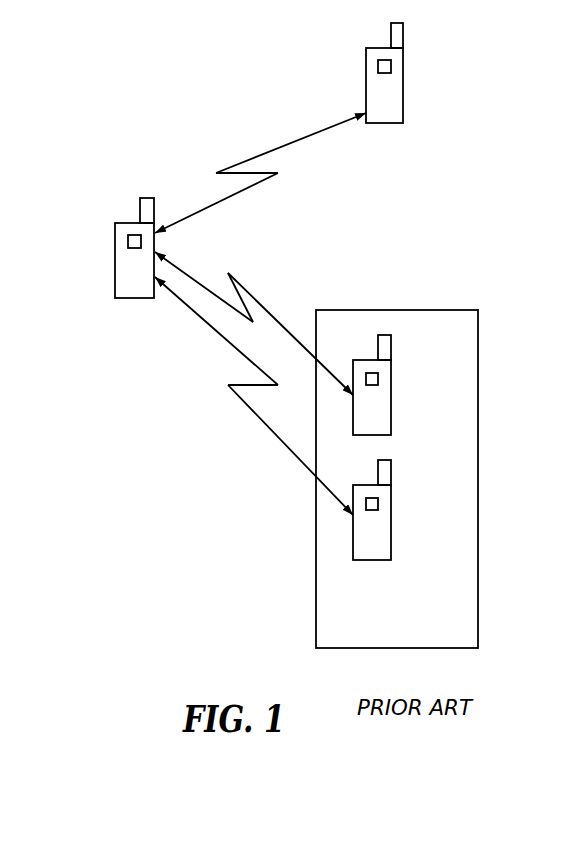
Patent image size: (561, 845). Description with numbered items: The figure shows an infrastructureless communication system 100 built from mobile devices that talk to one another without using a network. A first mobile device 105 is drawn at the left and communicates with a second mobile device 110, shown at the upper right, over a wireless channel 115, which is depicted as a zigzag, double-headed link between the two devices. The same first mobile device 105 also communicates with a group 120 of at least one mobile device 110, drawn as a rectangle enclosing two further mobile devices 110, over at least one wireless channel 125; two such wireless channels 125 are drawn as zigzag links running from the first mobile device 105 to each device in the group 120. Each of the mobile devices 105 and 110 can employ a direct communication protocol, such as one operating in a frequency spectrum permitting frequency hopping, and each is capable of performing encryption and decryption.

The infrastructureless communication system 100 is at (98, 572).
The first mobile device 105 is at (115, 272).
The second mobile device 110 is at (403, 110).
The wireless channel 115 is at (292, 135).
The group of at least one mobile device 120 is at (316, 572).
The wireless channel 125 is at (267, 307).